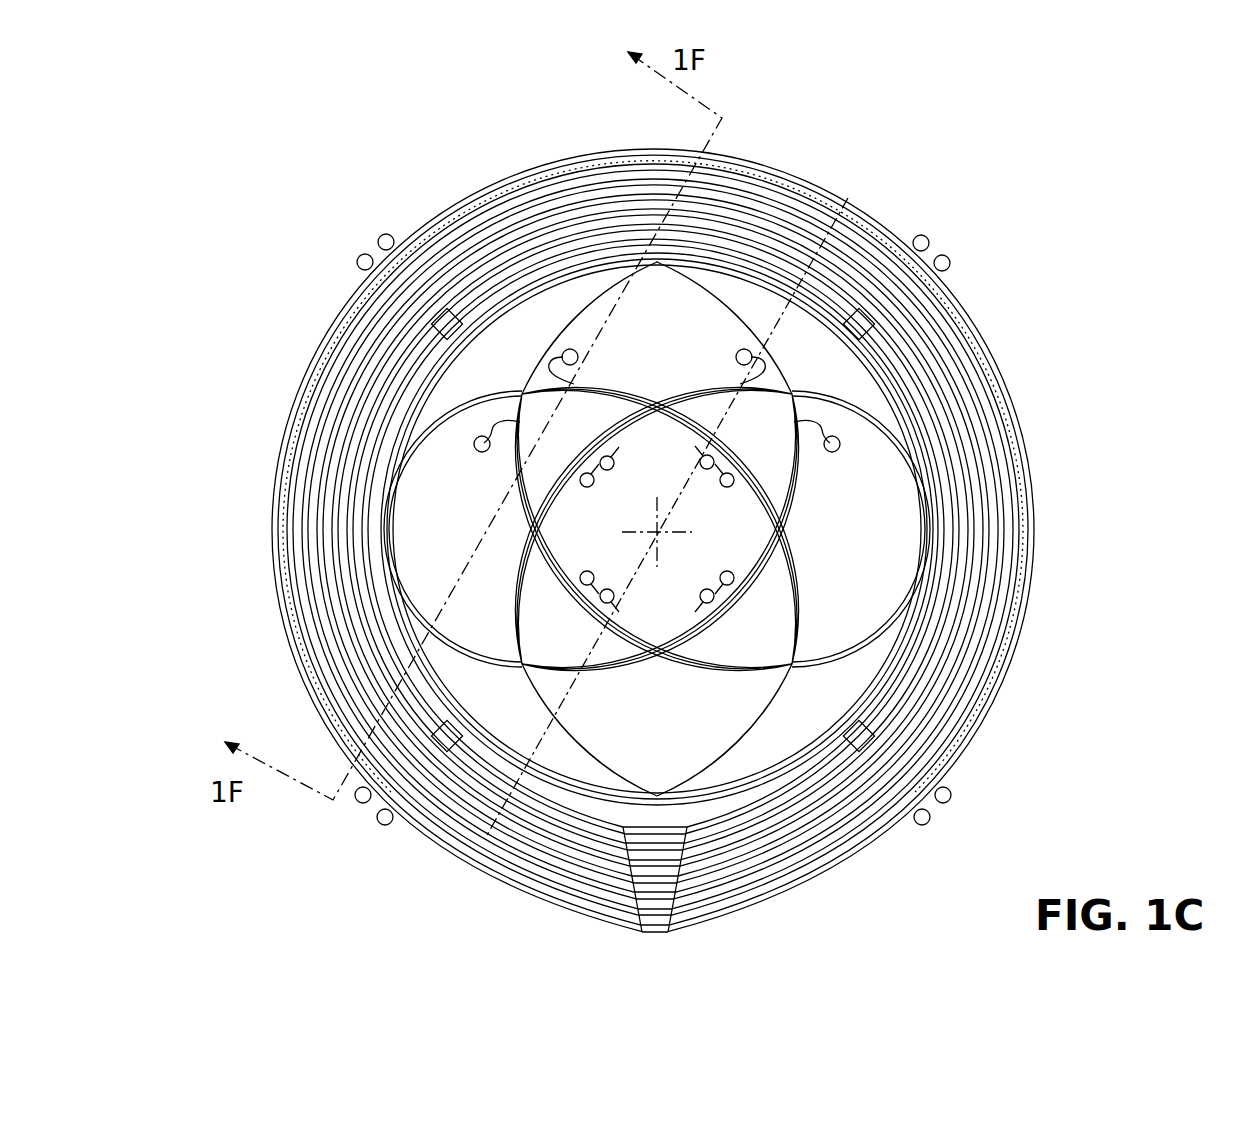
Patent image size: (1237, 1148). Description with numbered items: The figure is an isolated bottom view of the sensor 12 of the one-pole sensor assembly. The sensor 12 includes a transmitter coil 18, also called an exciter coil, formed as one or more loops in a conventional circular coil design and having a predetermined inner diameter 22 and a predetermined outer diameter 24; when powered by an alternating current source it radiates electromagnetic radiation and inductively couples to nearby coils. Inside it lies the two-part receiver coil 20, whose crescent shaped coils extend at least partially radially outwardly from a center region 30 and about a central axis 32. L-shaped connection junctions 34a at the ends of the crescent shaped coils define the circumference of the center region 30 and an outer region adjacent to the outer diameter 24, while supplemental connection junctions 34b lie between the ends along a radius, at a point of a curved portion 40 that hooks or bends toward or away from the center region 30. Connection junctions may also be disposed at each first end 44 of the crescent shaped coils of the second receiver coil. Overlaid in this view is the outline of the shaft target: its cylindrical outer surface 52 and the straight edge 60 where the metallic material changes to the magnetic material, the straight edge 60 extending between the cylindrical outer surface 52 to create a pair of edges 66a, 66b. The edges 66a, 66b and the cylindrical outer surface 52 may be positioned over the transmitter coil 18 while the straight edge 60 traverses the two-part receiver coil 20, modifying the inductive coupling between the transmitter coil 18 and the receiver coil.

The sensor 12 is at (285, 152).
The transmitter coil 18 is at (286, 492).
The two-part receiver coil 20 is at (526, 268).
The inner diameter 22 is at (393, 378).
The outer diameter 24 is at (303, 388).
The center region 30 is at (632, 495).
The central axis 32 is at (661, 540).
The connection junctions 34a is at (590, 573).
The supplemental connection junctions 34b is at (572, 368).
The curved portion 40 is at (486, 435).
The first end 44 is at (758, 896).
The cylindrical outer surface 52 is at (528, 183).
The straight edge 60 is at (532, 752).
The edge 66a is at (450, 866).
The edge 66b is at (850, 198).